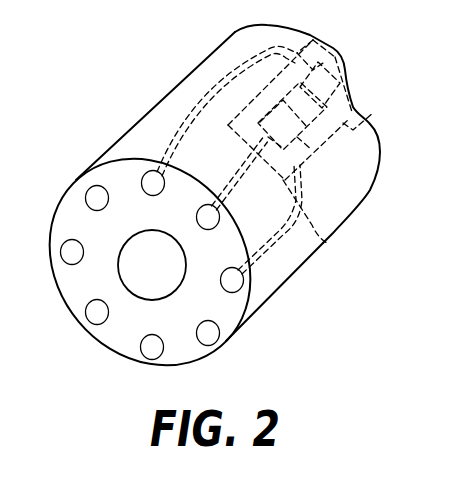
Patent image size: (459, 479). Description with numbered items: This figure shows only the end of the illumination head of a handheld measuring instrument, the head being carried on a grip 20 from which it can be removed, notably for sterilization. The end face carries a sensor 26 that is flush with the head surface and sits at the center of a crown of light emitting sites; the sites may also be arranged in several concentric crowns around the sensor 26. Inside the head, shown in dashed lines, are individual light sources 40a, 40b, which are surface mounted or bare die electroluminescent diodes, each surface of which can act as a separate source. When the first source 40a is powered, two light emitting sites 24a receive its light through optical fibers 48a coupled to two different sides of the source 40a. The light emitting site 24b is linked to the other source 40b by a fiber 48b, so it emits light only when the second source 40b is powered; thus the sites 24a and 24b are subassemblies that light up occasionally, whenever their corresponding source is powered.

The grip 20 is at (203, 62).
The light emitting sites 24a is at (221, 223).
The light emitting site 24b is at (141, 184).
The sensor 26 is at (127, 263).
The first light source 40a is at (360, 118).
The second light source 40b is at (338, 53).
The optical fibers 48a is at (337, 247).
The fiber 48b is at (203, 101).